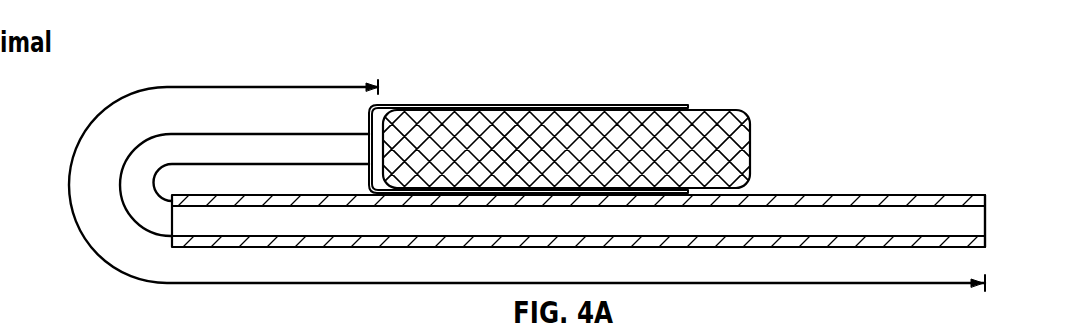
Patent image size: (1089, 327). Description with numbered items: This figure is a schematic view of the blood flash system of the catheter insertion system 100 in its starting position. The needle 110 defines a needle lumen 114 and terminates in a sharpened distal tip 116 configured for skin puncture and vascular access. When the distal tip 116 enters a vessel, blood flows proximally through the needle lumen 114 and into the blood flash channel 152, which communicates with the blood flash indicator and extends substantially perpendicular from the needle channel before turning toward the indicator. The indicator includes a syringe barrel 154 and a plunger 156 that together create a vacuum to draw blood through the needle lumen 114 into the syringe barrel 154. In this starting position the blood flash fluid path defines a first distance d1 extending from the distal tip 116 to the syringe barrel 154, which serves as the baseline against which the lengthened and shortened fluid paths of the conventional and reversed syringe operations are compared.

The catheter insertion system 100 is at (541, 145).
The needle 110 is at (620, 193).
The needle lumen 114 is at (787, 217).
The distal tip 116 is at (986, 218).
The blood flash channel 152 is at (144, 173).
The syringe barrel 154 is at (530, 104).
The plunger 156 is at (700, 120).
The first distance d1 is at (96, 254).